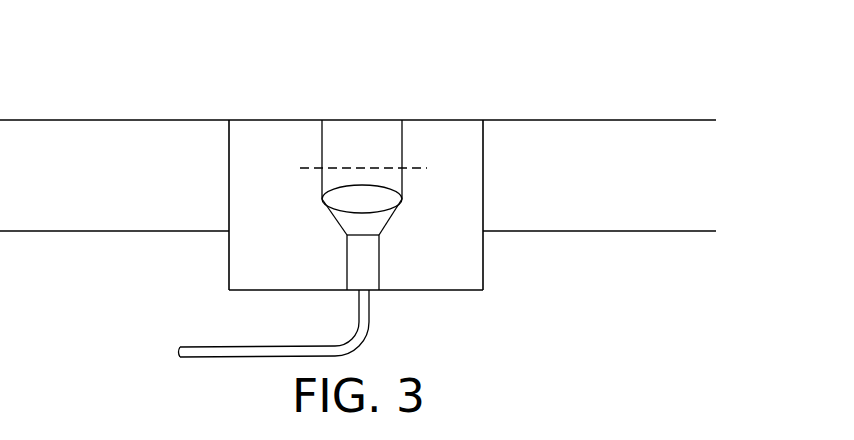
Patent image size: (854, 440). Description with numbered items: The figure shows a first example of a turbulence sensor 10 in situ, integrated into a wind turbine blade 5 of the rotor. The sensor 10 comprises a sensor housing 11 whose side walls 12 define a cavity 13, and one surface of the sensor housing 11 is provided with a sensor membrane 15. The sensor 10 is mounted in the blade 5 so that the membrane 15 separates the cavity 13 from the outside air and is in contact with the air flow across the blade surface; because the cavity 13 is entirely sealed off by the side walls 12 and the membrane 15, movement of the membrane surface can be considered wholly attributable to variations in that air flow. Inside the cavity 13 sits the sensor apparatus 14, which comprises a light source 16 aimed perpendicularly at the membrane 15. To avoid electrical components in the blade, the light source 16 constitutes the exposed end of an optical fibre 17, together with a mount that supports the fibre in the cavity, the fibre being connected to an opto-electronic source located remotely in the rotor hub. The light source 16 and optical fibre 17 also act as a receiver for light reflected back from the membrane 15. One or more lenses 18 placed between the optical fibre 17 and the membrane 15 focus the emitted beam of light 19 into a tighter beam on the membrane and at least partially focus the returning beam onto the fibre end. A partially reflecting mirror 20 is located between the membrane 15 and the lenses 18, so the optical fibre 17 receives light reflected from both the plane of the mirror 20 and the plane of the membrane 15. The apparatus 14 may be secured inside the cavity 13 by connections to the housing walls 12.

The wind turbine blade 5 is at (664, 128).
The sensor 10 is at (224, 68).
The sensor housing 11 is at (228, 297).
The side walls 12 is at (483, 273).
The cavity 13 is at (460, 229).
The sensor apparatus 14 is at (299, 205).
The sensor membrane 15 is at (462, 119).
The light source 16 is at (370, 262).
The optical fibre 17 is at (369, 315).
The lens 18 is at (333, 208).
The beam of light 19 is at (402, 147).
The partially reflecting mirror 20 is at (305, 163).